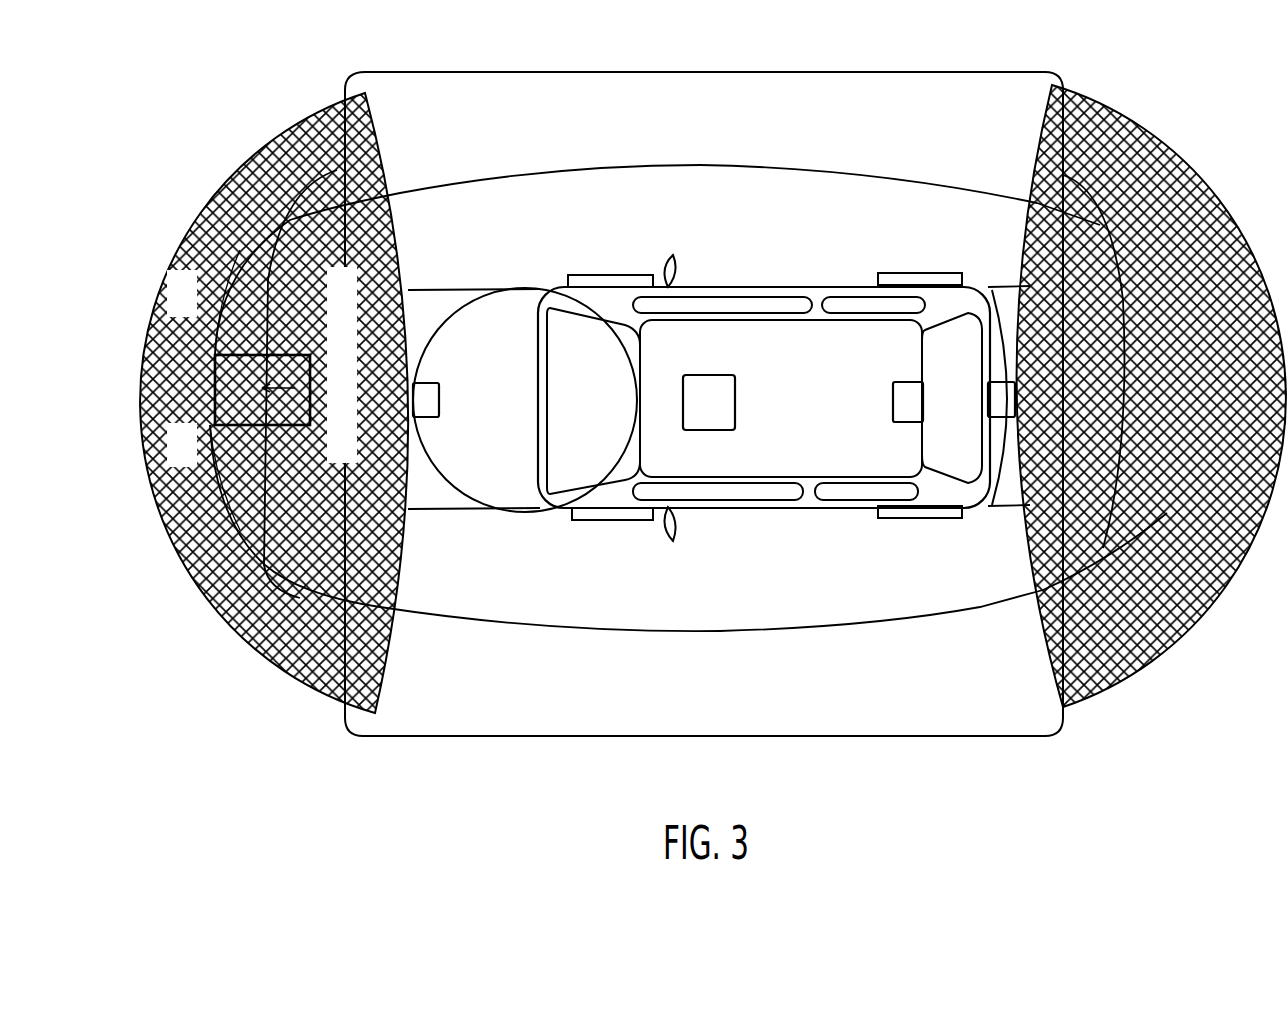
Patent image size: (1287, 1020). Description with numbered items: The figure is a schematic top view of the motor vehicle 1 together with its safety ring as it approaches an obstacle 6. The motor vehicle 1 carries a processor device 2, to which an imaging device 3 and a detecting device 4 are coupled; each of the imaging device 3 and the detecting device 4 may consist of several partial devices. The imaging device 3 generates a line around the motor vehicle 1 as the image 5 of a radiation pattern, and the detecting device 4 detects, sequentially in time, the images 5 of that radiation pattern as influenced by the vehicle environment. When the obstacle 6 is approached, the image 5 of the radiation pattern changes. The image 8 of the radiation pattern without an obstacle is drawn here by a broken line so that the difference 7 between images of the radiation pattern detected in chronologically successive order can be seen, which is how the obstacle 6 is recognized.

The motor vehicle 1 is at (840, 358).
The processor device 2 is at (709, 402).
The imaging device 3 is at (714, 400).
The detecting device 4 is at (683, 237).
The image of the radiation pattern 5 is at (484, 180).
The obstacle 6 is at (223, 345).
The difference 7 is at (300, 372).
The image of the radiation pattern without an obstacle 8 is at (240, 425).